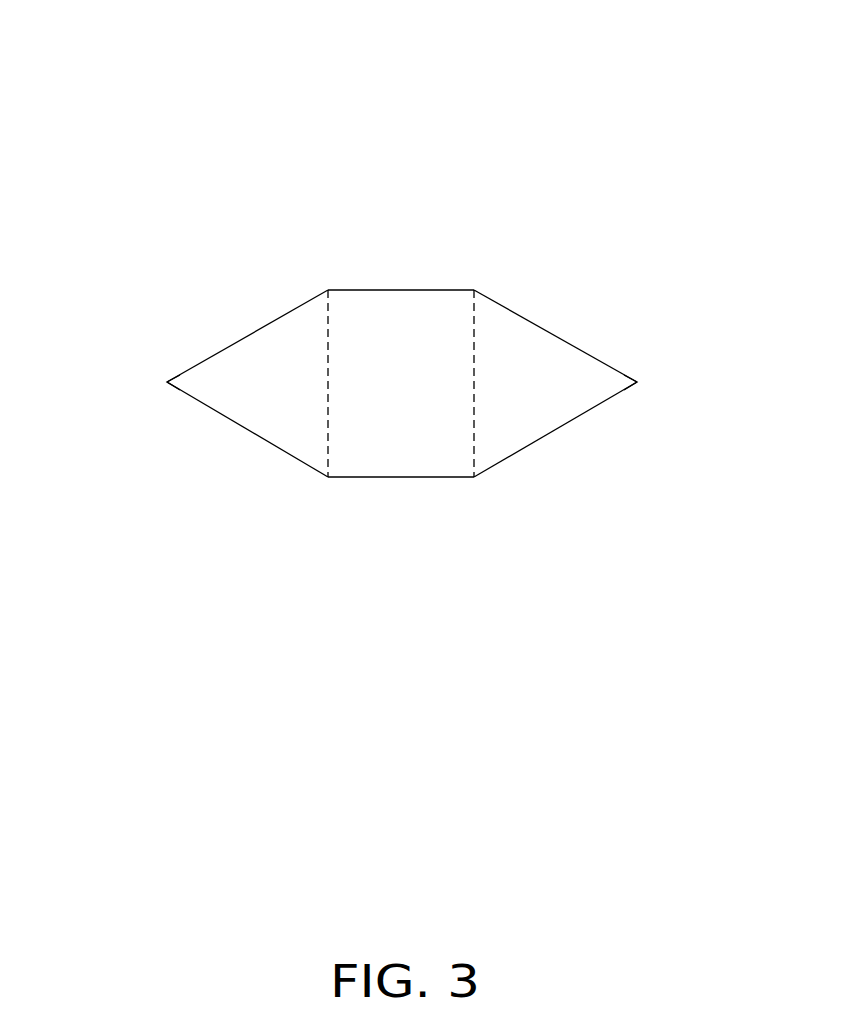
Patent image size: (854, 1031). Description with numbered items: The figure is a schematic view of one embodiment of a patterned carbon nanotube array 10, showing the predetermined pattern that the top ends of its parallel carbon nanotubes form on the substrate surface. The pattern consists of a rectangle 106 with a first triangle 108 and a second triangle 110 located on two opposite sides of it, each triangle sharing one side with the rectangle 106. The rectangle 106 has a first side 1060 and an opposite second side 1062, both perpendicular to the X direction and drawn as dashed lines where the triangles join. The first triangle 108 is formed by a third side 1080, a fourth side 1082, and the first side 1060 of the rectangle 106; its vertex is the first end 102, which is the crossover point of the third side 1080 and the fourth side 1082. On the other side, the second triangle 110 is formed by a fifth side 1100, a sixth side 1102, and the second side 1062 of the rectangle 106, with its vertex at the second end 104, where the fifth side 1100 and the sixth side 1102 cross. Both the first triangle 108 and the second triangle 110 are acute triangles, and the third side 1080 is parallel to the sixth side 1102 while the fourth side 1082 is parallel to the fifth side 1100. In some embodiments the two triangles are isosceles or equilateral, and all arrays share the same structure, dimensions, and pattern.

The patterned carbon nanotube array 10 is at (403, 292).
The first end 102 is at (637, 382).
The second end 104 is at (117, 371).
The rectangle 106 is at (401, 388).
The first side 1060 is at (475, 390).
The second side 1062 is at (328, 400).
The first triangle 108 is at (612, 374).
The third side 1080 is at (538, 323).
The fourth side 1082 is at (535, 443).
The second triangle 110 is at (191, 370).
The fifth side 1100 is at (283, 313).
The sixth side 1102 is at (268, 440).